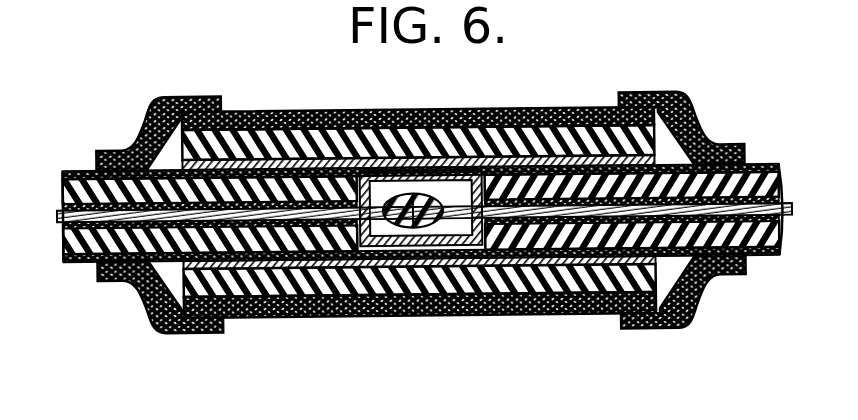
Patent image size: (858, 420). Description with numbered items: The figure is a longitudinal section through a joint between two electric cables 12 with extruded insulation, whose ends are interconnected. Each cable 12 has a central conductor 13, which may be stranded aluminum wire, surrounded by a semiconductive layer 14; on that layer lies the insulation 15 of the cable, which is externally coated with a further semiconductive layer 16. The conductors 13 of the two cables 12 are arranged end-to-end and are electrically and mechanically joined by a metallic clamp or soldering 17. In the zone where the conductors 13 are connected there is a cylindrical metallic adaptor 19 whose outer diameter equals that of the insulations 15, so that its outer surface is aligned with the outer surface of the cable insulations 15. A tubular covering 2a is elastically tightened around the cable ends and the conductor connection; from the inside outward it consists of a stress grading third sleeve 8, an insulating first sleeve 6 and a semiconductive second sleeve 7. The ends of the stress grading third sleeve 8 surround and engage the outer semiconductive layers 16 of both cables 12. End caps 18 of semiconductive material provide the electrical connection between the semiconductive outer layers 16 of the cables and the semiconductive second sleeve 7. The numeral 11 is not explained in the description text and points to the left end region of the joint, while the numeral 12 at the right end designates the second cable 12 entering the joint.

The tubular covering 2a is at (322, 108).
The insulating first sleeve 6 is at (557, 135).
The semiconductive second sleeve 7 is at (477, 162).
The stress grading third sleeve 8 is at (398, 174).
The left end of cable conduit 11 is at (65, 276).
The cable 12 is at (770, 275).
The conductor 13 is at (57, 216).
The semiconductive layer 14 is at (55, 228).
The insulation 15 is at (150, 300).
The semiconductive layer 16 is at (86, 168).
The soldering 17 is at (438, 232).
The end caps 18 is at (152, 113).
The metallic adaptor 19 is at (372, 250).